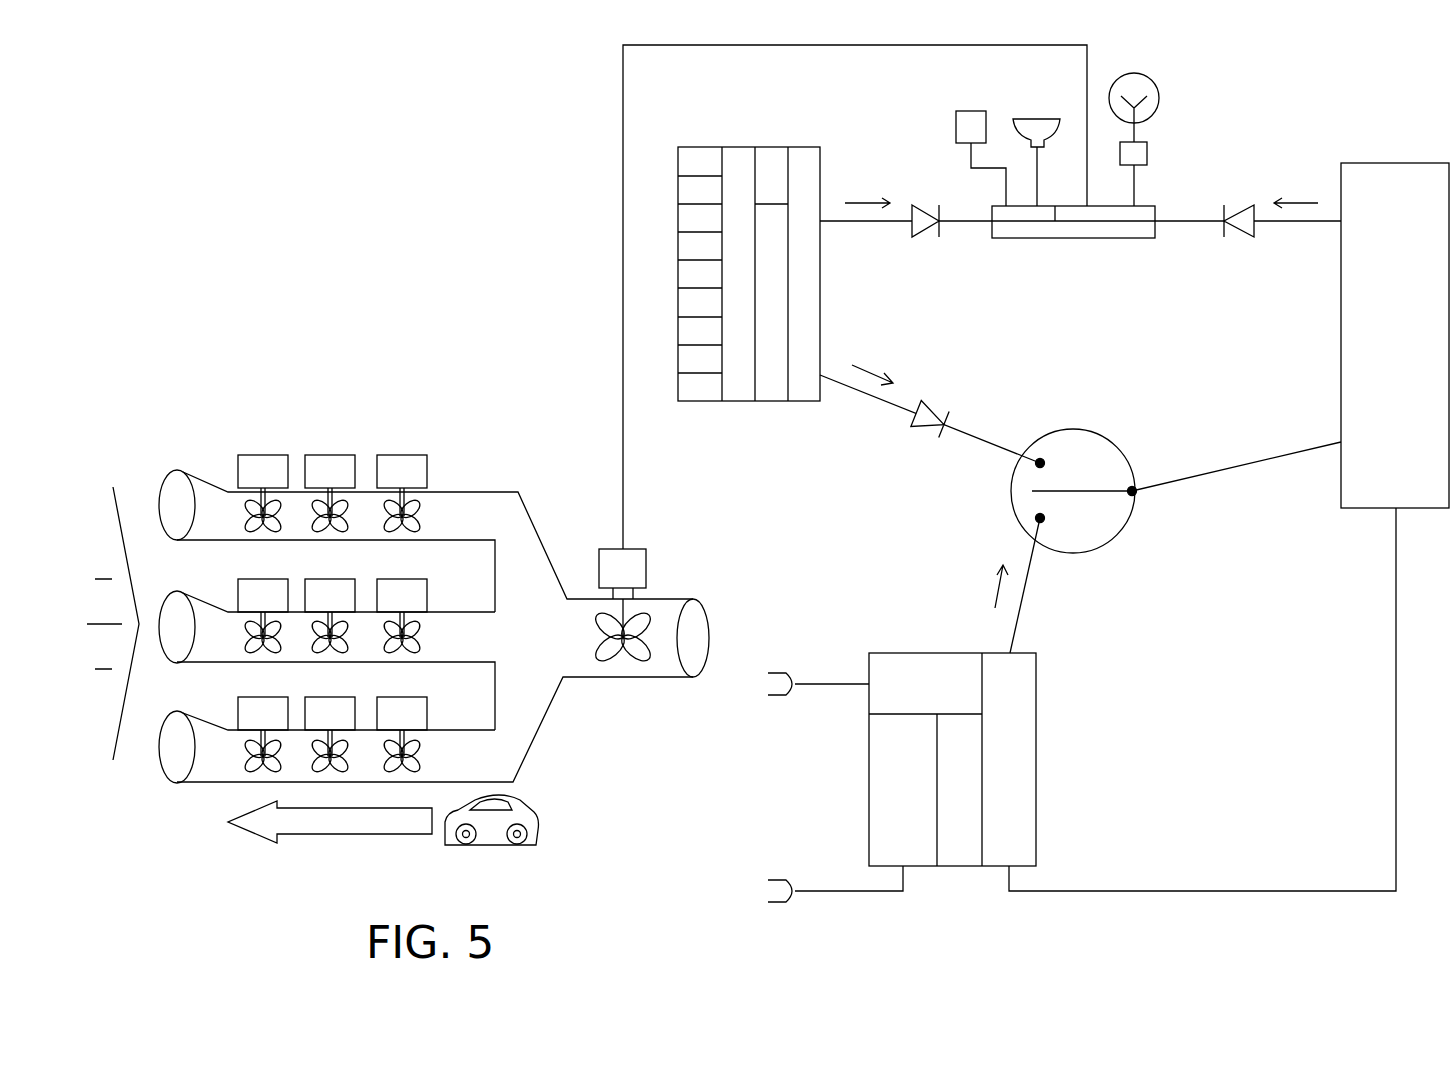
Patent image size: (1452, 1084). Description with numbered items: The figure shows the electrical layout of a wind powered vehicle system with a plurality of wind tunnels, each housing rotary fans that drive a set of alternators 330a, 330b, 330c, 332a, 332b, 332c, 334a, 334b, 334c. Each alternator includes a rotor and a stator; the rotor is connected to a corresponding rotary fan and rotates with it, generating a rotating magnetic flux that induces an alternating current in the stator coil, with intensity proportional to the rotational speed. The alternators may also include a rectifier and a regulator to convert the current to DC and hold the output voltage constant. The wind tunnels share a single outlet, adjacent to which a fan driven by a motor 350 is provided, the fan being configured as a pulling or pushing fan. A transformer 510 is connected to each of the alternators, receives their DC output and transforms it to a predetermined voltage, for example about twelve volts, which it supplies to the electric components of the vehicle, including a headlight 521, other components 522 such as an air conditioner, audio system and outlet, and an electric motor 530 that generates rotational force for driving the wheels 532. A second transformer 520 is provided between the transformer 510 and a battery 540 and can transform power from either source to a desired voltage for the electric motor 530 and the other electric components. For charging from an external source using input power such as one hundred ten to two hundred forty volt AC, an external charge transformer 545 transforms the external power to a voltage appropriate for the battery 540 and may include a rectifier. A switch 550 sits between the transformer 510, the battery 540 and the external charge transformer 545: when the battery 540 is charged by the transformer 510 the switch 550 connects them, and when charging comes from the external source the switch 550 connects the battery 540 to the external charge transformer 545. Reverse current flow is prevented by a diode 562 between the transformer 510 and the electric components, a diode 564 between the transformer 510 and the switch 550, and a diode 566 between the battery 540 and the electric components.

The alternator 330a is at (678, 163).
The alternator 330b is at (678, 190).
The alternator 330c is at (678, 218).
The alternator 332a is at (678, 247).
The alternator 332b is at (678, 275).
The alternator 332c is at (678, 303).
The alternator 334a is at (678, 331).
The alternator 334b is at (678, 358).
The alternator 334c is at (678, 387).
The motor 350 is at (646, 568).
The transformer 510 is at (756, 140).
The second transformer 520 is at (1068, 238).
The headlight 521 is at (1035, 119).
The other components 522 is at (960, 111).
The electric motor 530 is at (1147, 153).
The wheels 532 is at (1159, 90).
The battery 540 is at (1390, 155).
The external charge transformer 545 is at (1048, 755).
The switch 550 is at (1120, 430).
The diode 562 is at (923, 237).
The diode 564 is at (925, 405).
The diode 566 is at (1243, 237).